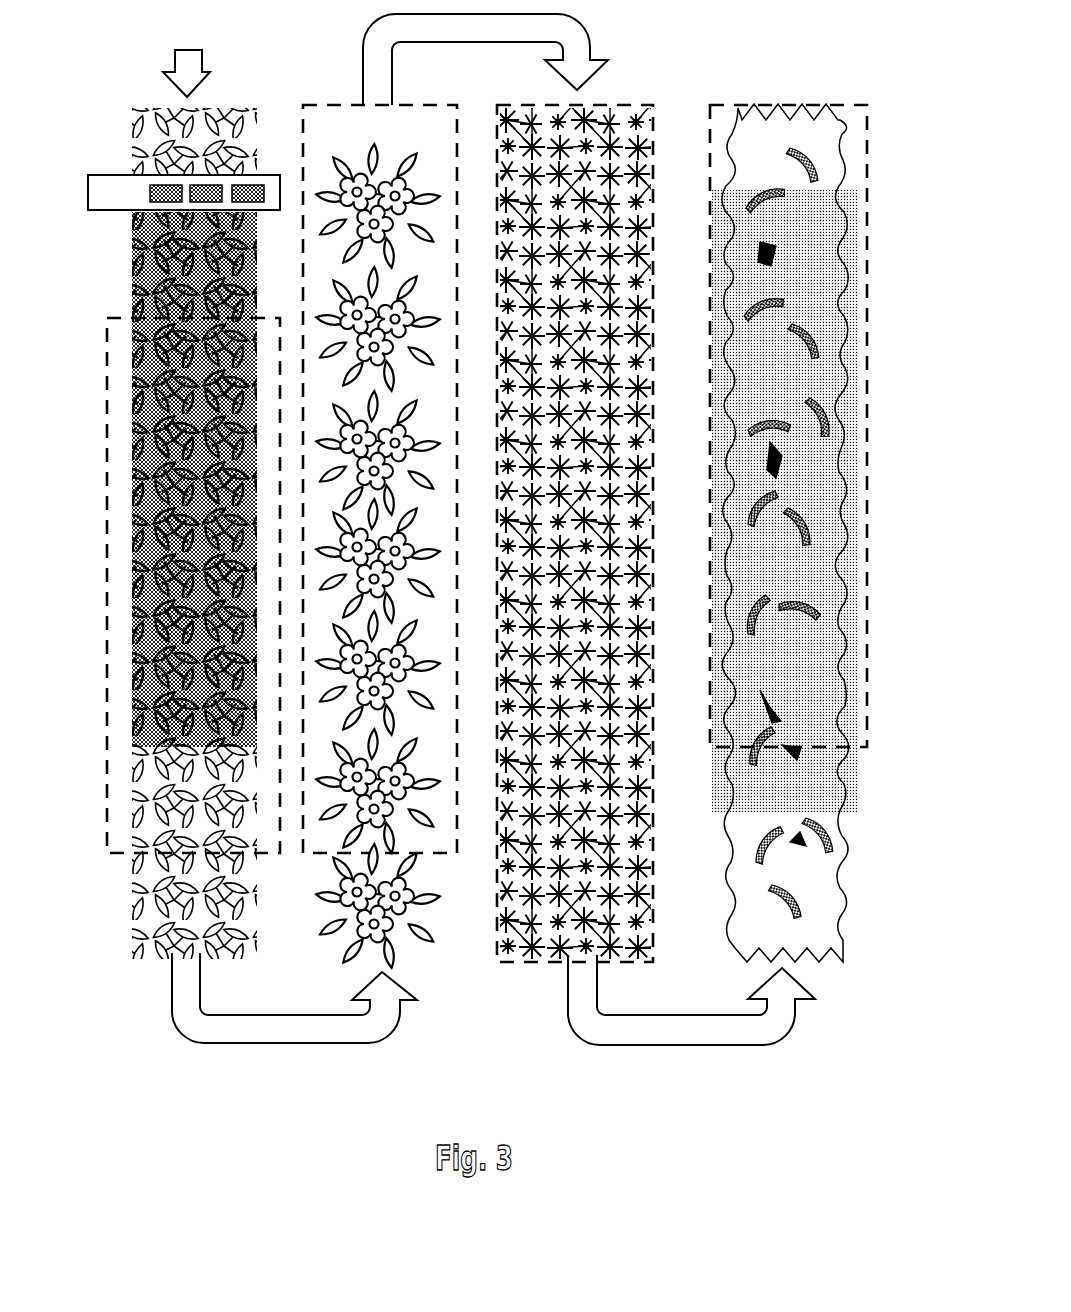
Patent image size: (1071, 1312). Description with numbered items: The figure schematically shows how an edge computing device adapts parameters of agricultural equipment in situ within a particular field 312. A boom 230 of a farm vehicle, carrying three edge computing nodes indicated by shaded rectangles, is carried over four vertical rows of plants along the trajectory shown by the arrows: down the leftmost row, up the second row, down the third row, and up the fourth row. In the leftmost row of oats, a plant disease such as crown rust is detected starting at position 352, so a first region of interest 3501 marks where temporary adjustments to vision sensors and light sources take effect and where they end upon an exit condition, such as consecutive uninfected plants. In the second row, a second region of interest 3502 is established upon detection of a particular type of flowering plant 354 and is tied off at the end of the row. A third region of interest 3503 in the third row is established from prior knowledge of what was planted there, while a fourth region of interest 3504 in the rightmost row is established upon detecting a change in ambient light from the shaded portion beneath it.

The boom 230 is at (278, 175).
The position 352 is at (132, 283).
The first region of interest 3501 is at (107, 392).
The second region of interest 3502 is at (337, 105).
The third region of interest 3503 is at (655, 352).
The fourth region of interest 3504 is at (867, 665).
The flowering plant 354 is at (422, 962).
The field 312 is at (900, 322).